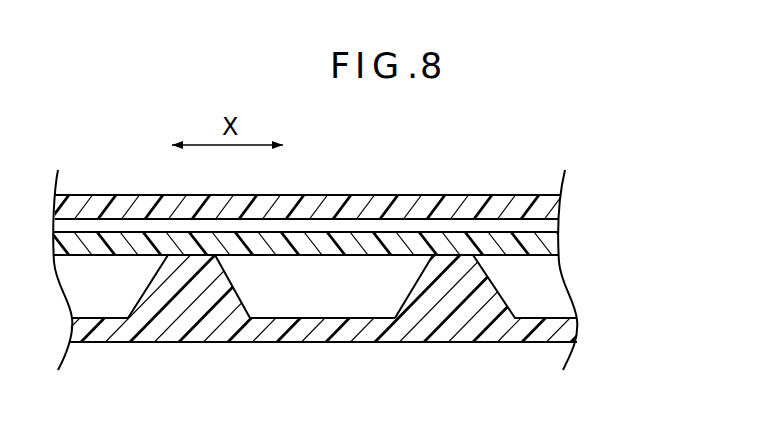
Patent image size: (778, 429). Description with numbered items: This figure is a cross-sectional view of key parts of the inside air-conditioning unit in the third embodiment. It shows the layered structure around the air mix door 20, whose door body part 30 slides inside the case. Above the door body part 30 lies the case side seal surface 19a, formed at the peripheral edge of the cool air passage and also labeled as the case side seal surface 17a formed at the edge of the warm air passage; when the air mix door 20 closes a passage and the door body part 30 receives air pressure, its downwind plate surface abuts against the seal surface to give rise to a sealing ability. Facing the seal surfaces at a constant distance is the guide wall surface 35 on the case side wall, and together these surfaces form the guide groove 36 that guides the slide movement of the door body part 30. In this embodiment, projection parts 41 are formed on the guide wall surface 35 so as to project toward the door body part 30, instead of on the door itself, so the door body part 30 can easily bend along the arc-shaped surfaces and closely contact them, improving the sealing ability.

The case side seal surface 19a is at (548, 207).
The case side seal surface 17a is at (392, 221).
The air mix door 20 is at (128, 226).
The door body part 30 is at (353, 247).
The guide wall surface 35 is at (560, 332).
The guide groove 36 is at (729, 215).
The projection part 41 is at (422, 275).